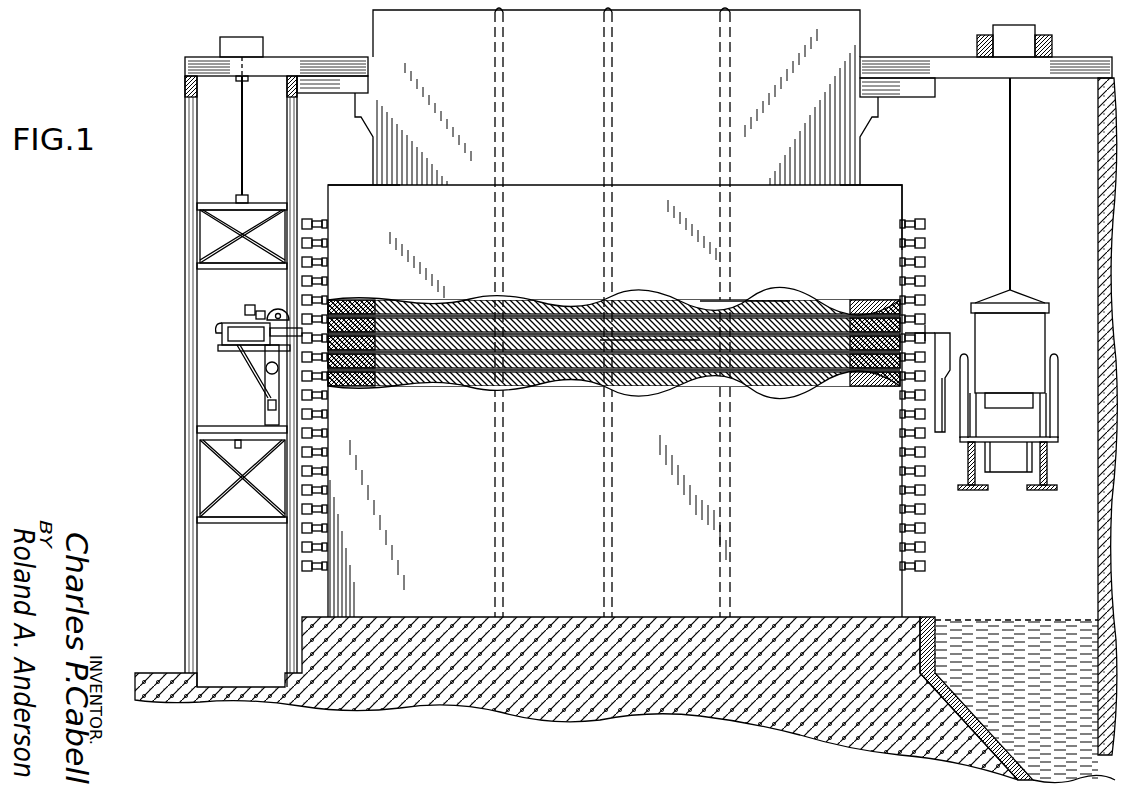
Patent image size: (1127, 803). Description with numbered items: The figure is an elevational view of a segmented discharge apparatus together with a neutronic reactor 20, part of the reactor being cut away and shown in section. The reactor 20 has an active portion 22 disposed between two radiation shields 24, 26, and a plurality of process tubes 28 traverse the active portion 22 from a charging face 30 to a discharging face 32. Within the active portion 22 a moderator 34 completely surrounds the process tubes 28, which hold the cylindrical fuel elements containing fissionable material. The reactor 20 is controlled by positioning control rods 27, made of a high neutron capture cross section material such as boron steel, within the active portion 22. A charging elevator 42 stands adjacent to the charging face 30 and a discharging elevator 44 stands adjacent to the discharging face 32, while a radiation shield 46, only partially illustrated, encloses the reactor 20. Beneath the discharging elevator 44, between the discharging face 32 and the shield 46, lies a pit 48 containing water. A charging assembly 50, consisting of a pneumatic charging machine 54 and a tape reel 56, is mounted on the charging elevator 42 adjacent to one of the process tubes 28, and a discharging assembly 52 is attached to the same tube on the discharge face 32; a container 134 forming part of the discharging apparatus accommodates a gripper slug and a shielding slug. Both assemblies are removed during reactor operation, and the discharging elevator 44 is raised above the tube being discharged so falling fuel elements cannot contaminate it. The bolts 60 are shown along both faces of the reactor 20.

The neutronic reactor 20 is at (655, 186).
The active portion 22 is at (548, 300).
The radiation shield 24 is at (375, 276).
The radiation shield 26 is at (868, 302).
The control rods 27 is at (605, 125).
The process tubes 28 is at (650, 335).
The charging face 30 is at (328, 196).
The discharging face 32 is at (904, 205).
The moderator 34 is at (745, 302).
The charging elevator 42 is at (183, 256).
The discharging elevator 44 is at (1045, 348).
The radiation shield 46 is at (840, 43).
The pit 48 is at (1030, 628).
The charging assembly 50 is at (225, 321).
The discharging assembly 52 is at (947, 332).
The pneumatic charging machine 54 is at (236, 336).
The tape reel 56 is at (278, 306).
The bolts 60 is at (302, 566).
The container 134 is at (946, 425).